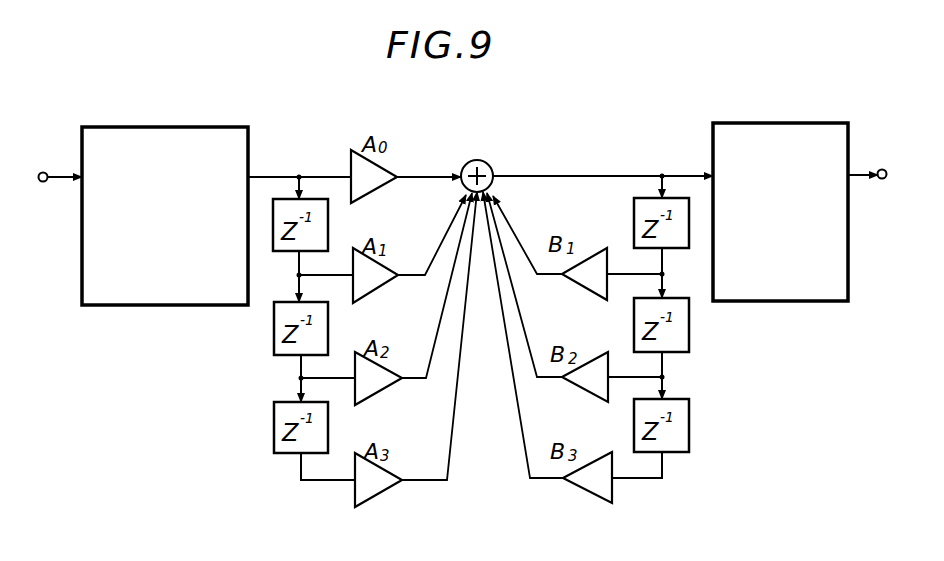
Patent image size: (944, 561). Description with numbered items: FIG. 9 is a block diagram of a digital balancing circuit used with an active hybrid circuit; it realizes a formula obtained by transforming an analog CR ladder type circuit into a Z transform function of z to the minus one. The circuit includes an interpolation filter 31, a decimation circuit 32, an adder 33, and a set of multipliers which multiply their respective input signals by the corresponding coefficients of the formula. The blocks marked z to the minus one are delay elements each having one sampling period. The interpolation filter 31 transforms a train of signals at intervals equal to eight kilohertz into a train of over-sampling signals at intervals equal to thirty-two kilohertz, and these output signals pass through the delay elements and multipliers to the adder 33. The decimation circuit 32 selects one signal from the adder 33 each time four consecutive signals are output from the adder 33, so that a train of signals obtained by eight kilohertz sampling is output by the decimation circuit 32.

The interpolation filter 31 is at (165, 127).
The decimation circuit 32 is at (731, 123).
The adder 33 is at (478, 160).